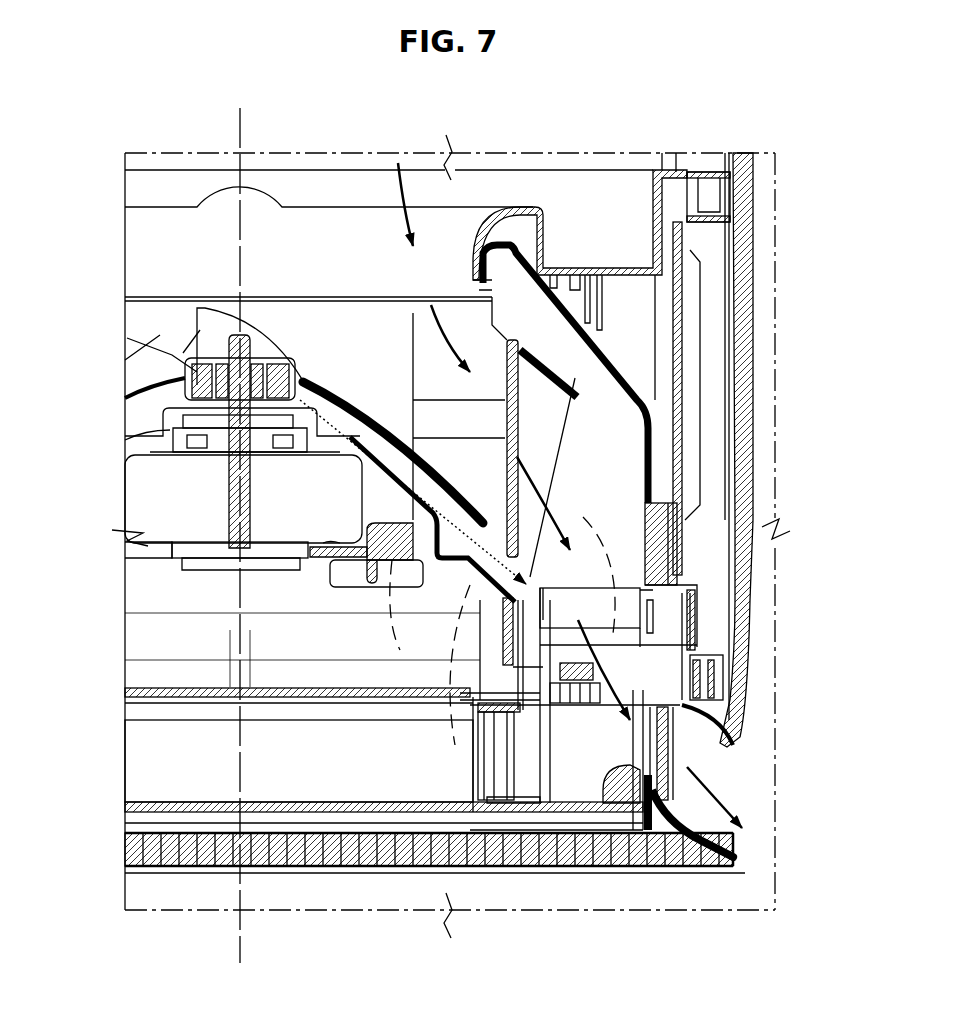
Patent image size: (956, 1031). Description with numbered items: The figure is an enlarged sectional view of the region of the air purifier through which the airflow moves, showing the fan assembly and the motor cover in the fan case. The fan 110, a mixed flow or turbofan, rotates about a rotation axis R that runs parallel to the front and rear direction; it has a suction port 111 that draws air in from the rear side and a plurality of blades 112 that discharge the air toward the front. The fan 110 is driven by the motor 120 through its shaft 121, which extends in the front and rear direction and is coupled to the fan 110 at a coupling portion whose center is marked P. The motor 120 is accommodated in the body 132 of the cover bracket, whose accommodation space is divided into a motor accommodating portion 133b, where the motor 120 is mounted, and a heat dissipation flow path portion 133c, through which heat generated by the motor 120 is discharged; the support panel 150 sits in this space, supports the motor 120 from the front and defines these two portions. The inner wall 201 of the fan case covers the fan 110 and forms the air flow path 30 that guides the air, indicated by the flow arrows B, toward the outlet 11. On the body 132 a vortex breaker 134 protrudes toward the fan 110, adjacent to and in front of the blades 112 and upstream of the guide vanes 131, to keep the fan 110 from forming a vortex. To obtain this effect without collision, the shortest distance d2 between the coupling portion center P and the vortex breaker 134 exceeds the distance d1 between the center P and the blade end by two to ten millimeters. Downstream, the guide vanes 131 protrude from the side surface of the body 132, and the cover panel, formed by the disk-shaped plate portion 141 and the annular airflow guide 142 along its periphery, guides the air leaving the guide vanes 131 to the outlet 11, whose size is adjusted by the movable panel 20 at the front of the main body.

The outlet 11 is at (725, 782).
The panel 20 is at (197, 875).
The air flow path 30 is at (610, 520).
The fan 110 is at (612, 366).
The suction port 111 is at (463, 317).
The blade 112 is at (545, 462).
The motor 120 is at (146, 512).
The shaft 121 is at (232, 484).
The guide vane 131 is at (600, 660).
The body 132 is at (478, 590).
The motor accommodating portion 133b is at (327, 547).
The heat dissipation flow path portion 133c is at (345, 633).
The vortex breaker 134 is at (540, 607).
The plate portion 141 is at (270, 693).
The airflow guide 142 is at (533, 600).
The support panel 150 is at (378, 418).
The inner wall 201 is at (572, 380).
The rotation axis R is at (240, 130).
The coupling portion center P is at (232, 360).
The air flow B is at (570, 513).
The distance d1 is at (493, 543).
The shortest distance d2 is at (470, 540).